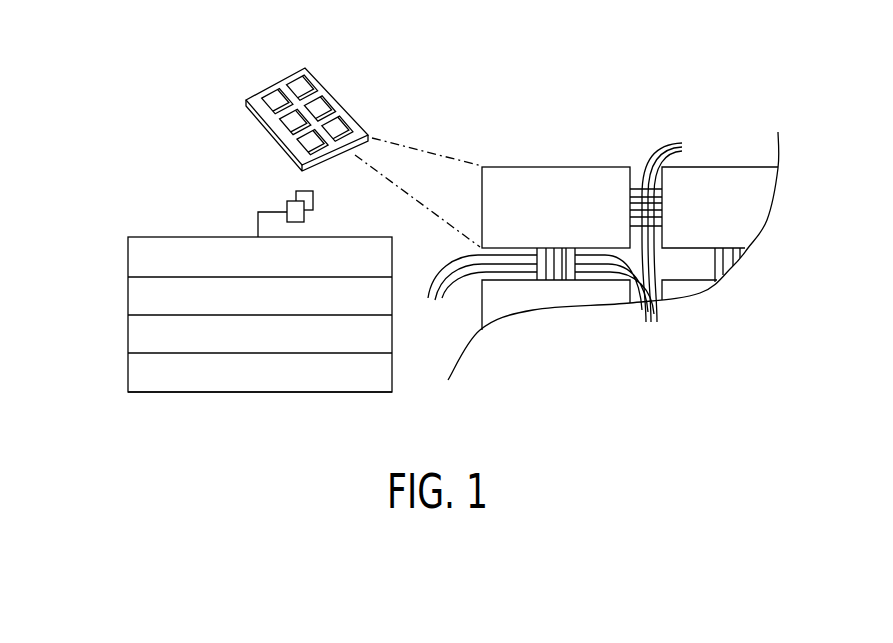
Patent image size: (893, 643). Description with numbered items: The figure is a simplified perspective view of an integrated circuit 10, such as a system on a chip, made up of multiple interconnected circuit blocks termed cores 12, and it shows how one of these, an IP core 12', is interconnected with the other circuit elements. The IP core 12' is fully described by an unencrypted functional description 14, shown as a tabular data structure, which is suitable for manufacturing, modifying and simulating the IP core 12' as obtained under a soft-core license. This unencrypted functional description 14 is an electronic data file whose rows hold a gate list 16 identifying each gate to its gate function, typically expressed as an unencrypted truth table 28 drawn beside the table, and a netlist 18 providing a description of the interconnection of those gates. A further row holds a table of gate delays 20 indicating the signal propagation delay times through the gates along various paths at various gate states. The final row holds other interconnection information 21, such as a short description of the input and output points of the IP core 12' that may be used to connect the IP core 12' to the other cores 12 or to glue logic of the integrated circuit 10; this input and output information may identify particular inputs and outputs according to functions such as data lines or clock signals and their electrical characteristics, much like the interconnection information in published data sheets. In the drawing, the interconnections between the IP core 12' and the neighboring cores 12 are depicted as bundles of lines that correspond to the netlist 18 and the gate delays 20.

The integrated circuit 10 is at (224, 48).
The cores 12 is at (520, 192).
The IP core 12' is at (418, 189).
The unencrypted functional description 14 is at (172, 237).
The gate list 16 is at (128, 253).
The netlist 18 is at (128, 291).
The table of gate delays 20 is at (128, 329).
The interconnection information 21 is at (128, 368).
The unencrypted truth table 28 is at (297, 200).